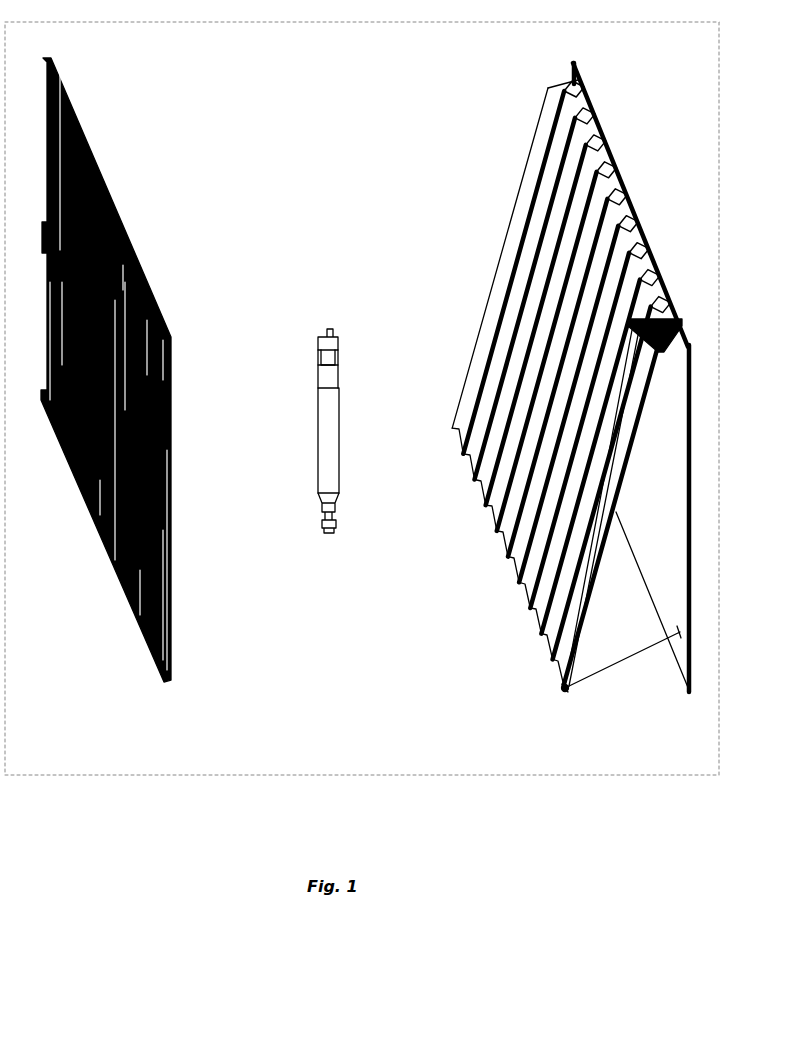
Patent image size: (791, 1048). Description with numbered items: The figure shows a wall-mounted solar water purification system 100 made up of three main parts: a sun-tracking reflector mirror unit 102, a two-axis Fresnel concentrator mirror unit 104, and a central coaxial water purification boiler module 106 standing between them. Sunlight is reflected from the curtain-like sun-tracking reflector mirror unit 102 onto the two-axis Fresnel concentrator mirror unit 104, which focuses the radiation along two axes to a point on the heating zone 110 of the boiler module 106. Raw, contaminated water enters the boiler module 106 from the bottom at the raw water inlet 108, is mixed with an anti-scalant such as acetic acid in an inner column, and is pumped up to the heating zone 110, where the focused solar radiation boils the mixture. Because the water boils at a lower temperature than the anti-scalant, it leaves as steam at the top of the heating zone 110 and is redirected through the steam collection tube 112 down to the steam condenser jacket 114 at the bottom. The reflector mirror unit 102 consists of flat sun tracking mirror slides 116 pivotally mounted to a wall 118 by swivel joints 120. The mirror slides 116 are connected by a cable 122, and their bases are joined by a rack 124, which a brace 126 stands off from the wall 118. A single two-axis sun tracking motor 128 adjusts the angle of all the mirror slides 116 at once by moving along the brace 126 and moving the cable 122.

The wall-mounted solar water purification system 100 is at (294, 658).
The sun-tracking reflector mirror unit 102 is at (563, 388).
The two-axis Fresnel concentrator mirror unit 104 is at (203, 630).
The coaxial water purification boiler module 106 is at (309, 442).
The raw water inlet 108 is at (322, 510).
The heating zone 110 is at (355, 398).
The steam collection tube 112 is at (340, 368).
The steam condenser jacket 114 is at (336, 446).
The sun tracking mirror slides 116 is at (488, 328).
The wall 118 is at (648, 580).
The swivel joints 120 is at (565, 88).
The cable 122 is at (635, 348).
The rack 124 is at (561, 666).
The brace 126 is at (620, 665).
The two-axis sun tracking motor 128 is at (570, 688).